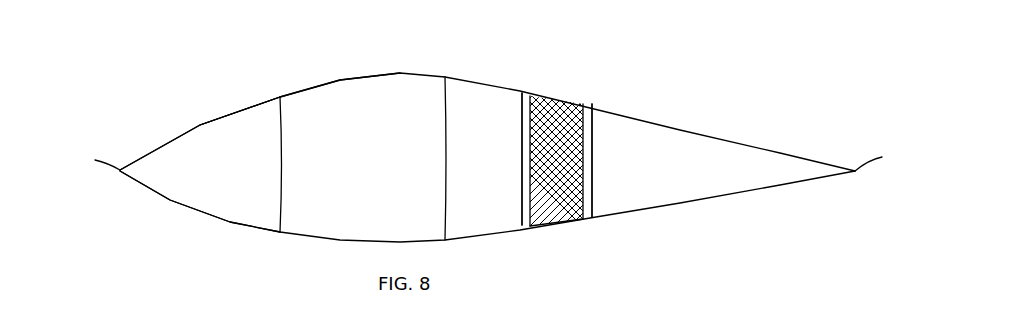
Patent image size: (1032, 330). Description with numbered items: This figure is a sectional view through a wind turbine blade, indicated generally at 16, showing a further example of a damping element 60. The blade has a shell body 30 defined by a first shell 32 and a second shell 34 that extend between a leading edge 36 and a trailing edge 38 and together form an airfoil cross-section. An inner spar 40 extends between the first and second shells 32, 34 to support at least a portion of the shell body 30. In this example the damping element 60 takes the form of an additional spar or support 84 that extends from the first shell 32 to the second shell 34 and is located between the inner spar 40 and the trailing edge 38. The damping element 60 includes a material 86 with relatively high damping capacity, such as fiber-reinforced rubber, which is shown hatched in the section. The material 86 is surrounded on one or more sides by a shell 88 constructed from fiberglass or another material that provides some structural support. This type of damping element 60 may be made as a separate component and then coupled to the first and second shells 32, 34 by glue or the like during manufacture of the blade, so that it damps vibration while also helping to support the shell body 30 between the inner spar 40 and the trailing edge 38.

The hull assembly 16 is at (182, 77).
The shell body 30 is at (170, 145).
The first shell 32 is at (232, 111).
The second shell 34 is at (167, 206).
The leading edge 36 is at (86, 159).
The trailing edge 38 is at (884, 160).
The inner spar 40 is at (279, 168).
The damping element 60 is at (548, 92).
The additional spar or support 84 is at (596, 117).
The material 86 is at (560, 190).
The shell 88 is at (522, 95).